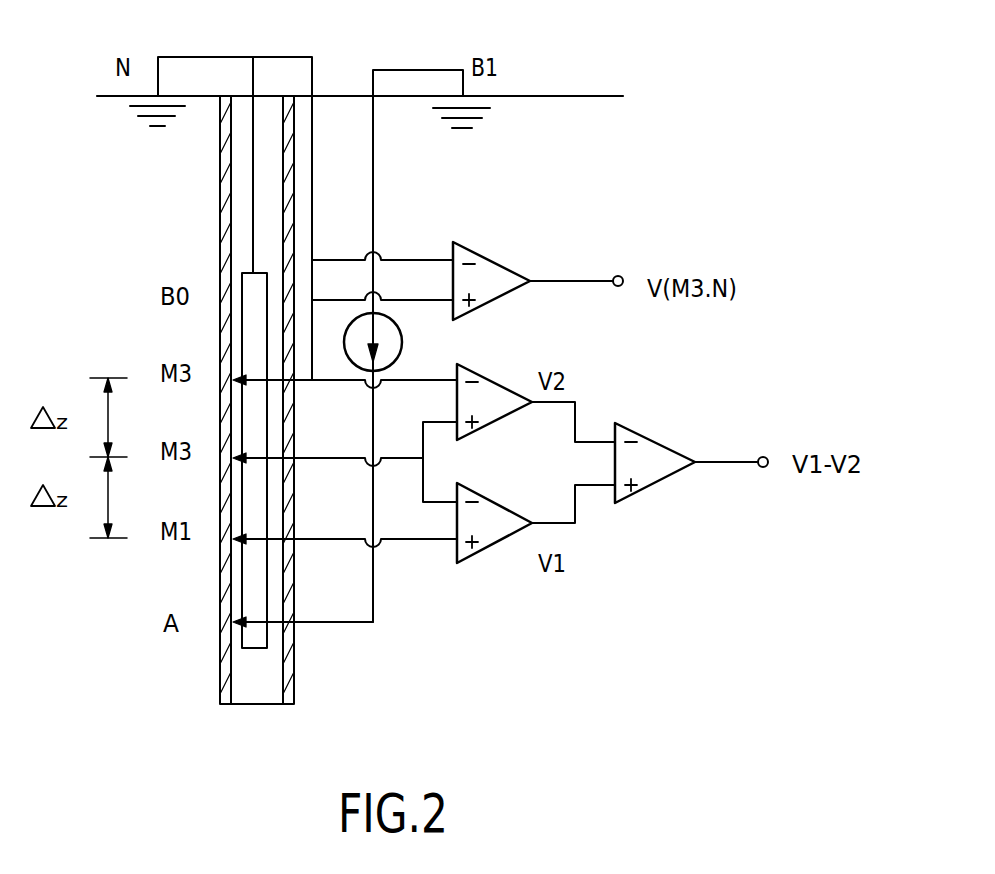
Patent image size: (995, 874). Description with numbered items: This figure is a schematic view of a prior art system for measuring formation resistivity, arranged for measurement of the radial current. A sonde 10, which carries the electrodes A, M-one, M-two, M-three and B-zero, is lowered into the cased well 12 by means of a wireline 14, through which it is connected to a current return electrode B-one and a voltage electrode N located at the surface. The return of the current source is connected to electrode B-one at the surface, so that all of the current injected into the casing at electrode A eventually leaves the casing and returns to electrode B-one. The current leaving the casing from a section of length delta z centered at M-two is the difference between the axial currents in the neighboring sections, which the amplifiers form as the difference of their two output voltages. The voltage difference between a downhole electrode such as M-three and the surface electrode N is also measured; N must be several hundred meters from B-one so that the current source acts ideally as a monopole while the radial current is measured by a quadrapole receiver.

The sonde 10 is at (242, 282).
The cased well 12 is at (220, 229).
The wireline 14 is at (253, 57).